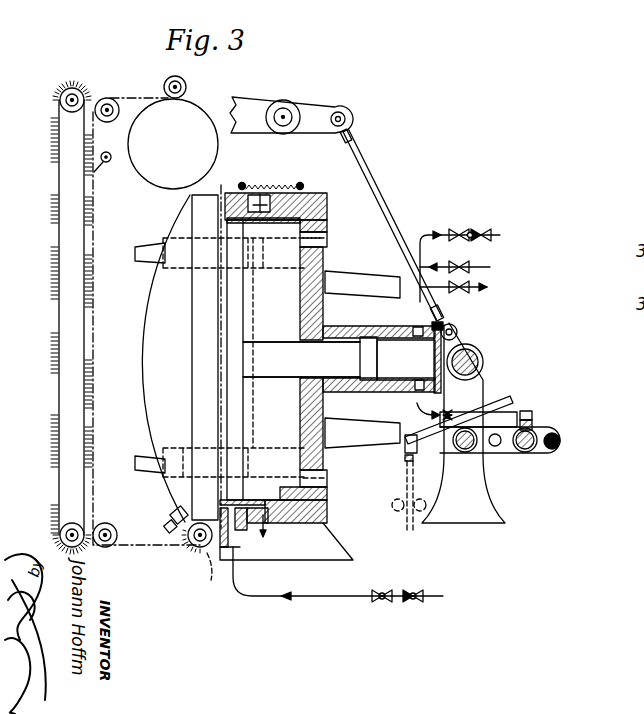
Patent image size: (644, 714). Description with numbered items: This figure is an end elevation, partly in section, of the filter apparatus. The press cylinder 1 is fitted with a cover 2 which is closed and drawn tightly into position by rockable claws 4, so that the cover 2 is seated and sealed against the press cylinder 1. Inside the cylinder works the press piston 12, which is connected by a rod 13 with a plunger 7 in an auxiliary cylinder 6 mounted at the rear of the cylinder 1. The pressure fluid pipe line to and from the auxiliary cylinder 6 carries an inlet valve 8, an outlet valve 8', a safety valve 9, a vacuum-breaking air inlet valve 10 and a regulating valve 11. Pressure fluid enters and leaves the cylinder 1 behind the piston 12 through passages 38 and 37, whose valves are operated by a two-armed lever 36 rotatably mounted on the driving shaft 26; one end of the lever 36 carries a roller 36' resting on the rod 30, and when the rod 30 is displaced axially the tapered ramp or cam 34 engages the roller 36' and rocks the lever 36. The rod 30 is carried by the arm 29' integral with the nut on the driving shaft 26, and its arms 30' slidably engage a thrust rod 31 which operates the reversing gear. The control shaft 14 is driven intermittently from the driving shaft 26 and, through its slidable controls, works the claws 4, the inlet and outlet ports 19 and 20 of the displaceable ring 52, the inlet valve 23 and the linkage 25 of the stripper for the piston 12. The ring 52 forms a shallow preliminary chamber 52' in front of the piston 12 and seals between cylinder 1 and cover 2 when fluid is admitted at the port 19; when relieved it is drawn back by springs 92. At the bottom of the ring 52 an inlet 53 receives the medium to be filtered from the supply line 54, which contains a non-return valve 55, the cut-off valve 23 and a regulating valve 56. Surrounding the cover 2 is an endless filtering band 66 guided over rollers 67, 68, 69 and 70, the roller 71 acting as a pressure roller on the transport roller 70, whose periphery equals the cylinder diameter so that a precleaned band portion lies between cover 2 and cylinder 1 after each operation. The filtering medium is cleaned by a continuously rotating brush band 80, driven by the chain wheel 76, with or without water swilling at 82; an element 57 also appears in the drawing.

The press cylinder 1 is at (322, 276).
The cover 2 is at (153, 431).
The rockable claws 4 is at (146, 256).
The auxiliary cylinder 6 is at (389, 328).
The plunger 7 is at (377, 393).
The inlet valve 8 is at (429, 417).
The outlet valve 8' is at (453, 295).
The safety valve 9 is at (460, 256).
The vacuum-breaking air inlet valve 10 is at (457, 261).
The regulating valve 11 is at (481, 225).
The press piston 12 is at (237, 238).
The rod 13 is at (340, 330).
The control shaft 14 is at (474, 356).
The inlet port 19 is at (268, 526).
The outlet port 20 is at (300, 189).
The inlet valve 23 is at (401, 595).
The linkage 25 is at (291, 105).
The driving shaft 26 is at (470, 449).
The arm 29' is at (620, 538).
The rod 30 is at (540, 457).
The arms 30' is at (511, 427).
The thrust rod 31 is at (560, 447).
The ramp or cam 34 is at (533, 427).
The two-armed lever 36 is at (465, 416).
The roller 36' is at (540, 400).
The passage 37 is at (330, 240).
The passage 38 is at (327, 478).
The displaceable ring 52 is at (270, 177).
The preliminary chamber 52' is at (169, 368).
The inlet 53 is at (236, 546).
The supply line 54 is at (318, 595).
The non-return valve 55 is at (380, 607).
The regulating valve 56 is at (415, 607).
The pad 57 is at (170, 515).
The filtering band 66 is at (165, 548).
The roller 67 is at (200, 549).
The roller 68 is at (98, 545).
The roller 69 is at (112, 99).
The transport roller 70 is at (201, 119).
The pressure roller 71 is at (187, 88).
The chain wheel 76 is at (217, 577).
The brush band 80 is at (78, 93).
The water swilling 82 is at (108, 151).
The springs 92 is at (272, 185).